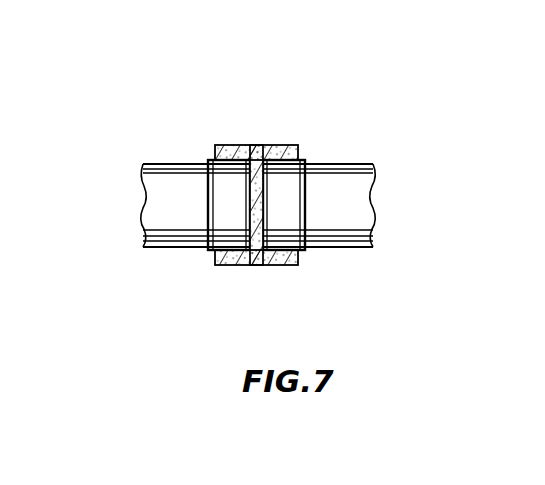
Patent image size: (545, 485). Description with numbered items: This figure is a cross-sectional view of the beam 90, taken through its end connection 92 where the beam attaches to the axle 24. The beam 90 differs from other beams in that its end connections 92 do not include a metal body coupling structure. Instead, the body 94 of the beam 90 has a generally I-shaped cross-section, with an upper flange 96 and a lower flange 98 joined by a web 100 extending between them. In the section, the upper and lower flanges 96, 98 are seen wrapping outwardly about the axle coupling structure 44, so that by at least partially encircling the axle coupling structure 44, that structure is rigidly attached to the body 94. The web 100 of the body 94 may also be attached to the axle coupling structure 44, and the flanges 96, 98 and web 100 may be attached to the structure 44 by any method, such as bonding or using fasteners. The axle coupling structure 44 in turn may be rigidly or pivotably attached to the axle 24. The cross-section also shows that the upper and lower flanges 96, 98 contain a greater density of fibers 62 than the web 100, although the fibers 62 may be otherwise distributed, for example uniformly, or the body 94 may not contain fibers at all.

The beam 90 is at (430, 199).
The axle 24 is at (360, 249).
The axle coupling structure 44 is at (360, 167).
The end connections 92 is at (206, 249).
The body 94 is at (262, 142).
The upper flange 96 is at (295, 157).
The lower flange 98 is at (240, 265).
The fibers 62 is at (290, 261).
The web 100 is at (250, 202).